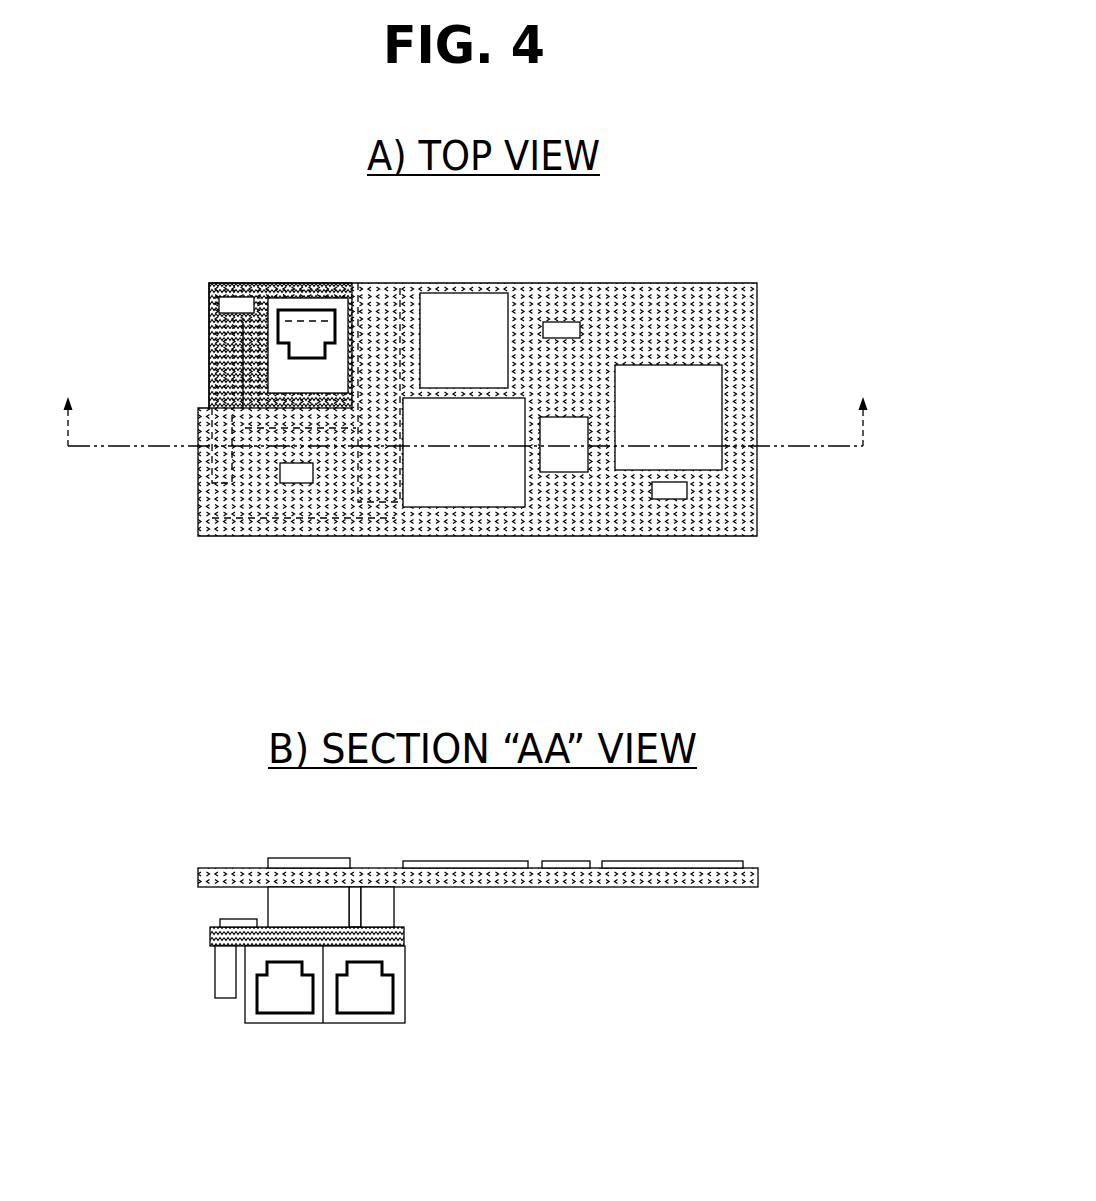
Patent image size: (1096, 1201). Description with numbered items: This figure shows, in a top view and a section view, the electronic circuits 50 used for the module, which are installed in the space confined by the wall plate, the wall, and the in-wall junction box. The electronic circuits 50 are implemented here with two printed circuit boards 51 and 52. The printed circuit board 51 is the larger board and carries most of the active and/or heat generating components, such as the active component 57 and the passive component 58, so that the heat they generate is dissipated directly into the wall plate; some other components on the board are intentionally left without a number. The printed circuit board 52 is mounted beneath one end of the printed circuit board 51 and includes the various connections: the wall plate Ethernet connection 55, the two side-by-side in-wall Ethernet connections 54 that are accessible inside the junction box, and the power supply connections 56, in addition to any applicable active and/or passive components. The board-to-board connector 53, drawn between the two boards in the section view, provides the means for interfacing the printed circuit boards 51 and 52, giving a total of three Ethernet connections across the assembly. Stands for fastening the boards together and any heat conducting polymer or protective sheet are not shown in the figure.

The electronic circuits 50 is at (672, 203).
The printed circuit board 51 is at (764, 341).
The printed circuit board 52 is at (198, 303).
The board-to-board connector 53 is at (380, 512).
The in-wall Ethernet connections 54 is at (333, 443).
The wall plate Ethernet connection 55 is at (305, 286).
The power supply connections 56 is at (248, 473).
The active component 57 is at (657, 365).
The passive component 58 is at (667, 500).